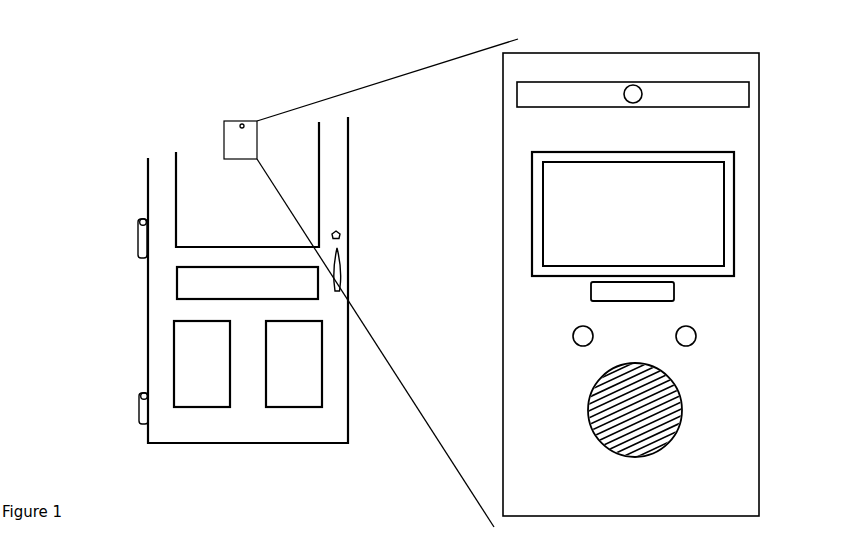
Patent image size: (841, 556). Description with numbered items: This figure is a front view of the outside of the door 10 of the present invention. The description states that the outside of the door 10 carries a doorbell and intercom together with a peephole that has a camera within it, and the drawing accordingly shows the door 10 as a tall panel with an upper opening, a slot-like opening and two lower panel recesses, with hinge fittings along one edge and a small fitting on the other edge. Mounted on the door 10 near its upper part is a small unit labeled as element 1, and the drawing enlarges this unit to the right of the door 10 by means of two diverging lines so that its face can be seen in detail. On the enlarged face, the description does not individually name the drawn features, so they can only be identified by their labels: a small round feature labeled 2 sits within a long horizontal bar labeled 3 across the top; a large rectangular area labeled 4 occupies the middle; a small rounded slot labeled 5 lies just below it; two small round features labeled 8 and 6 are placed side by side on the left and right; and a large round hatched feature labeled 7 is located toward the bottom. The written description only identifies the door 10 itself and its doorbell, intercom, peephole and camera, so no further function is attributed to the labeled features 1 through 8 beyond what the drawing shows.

The electronic door lock device 1 is at (213, 125).
The indicator light / button 2 is at (633, 85).
The top slot / card reader 3 is at (740, 95).
The display screen 4 is at (702, 208).
The slot / key insertion 5 is at (673, 293).
The button 6 is at (696, 336).
The speaker 7 is at (683, 415).
The button 8 is at (573, 336).
The door 10 is at (122, 324).